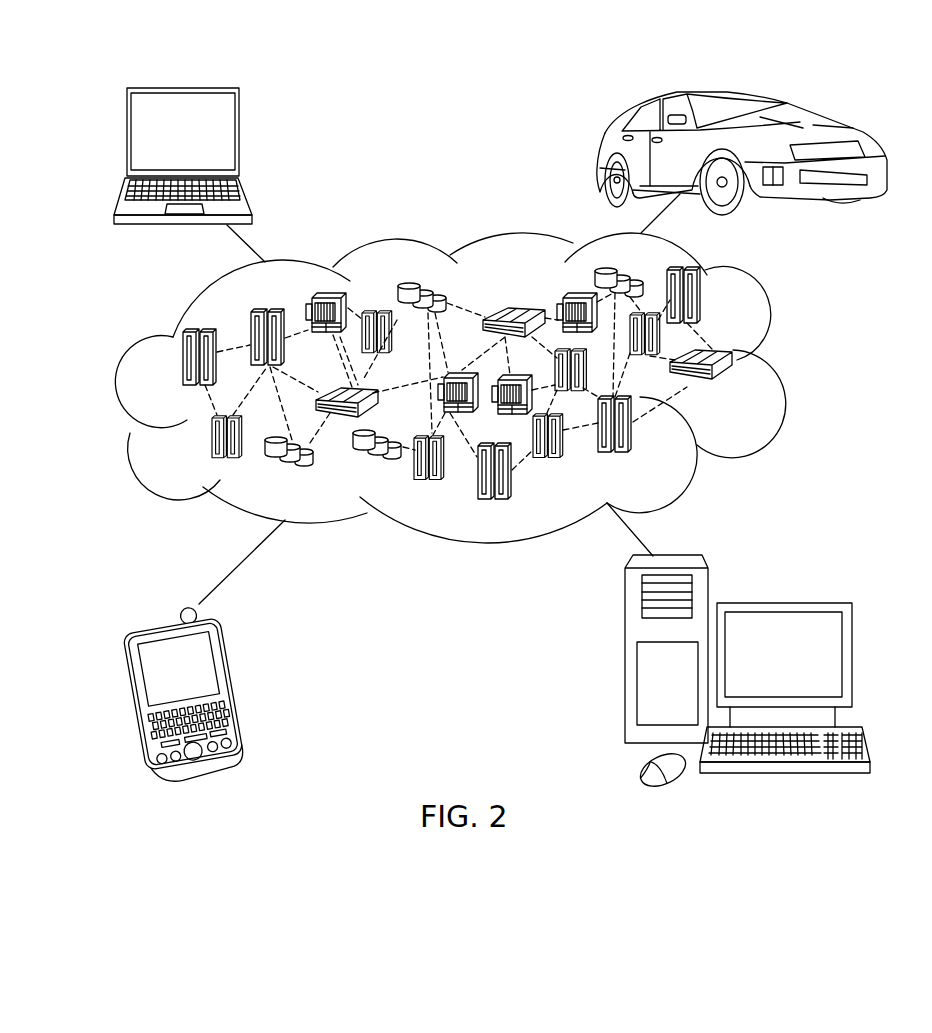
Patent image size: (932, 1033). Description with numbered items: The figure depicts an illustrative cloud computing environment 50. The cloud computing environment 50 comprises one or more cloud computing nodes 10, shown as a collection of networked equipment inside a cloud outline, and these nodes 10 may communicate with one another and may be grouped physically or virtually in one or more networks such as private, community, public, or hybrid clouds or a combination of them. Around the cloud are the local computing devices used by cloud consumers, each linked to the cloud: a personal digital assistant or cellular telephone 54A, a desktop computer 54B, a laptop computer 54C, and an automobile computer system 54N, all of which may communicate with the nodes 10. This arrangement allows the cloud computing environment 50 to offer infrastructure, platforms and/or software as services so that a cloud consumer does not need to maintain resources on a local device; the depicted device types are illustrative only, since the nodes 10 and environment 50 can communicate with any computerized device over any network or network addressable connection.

The cloud computing node 10 is at (737, 390).
The cloud computing environment 50 is at (782, 365).
The personal digital assistant or cellular telephone 54A is at (232, 683).
The desktop computer 54B is at (782, 603).
The laptop computer 54C is at (239, 140).
The automobile computer system 54N is at (601, 150).